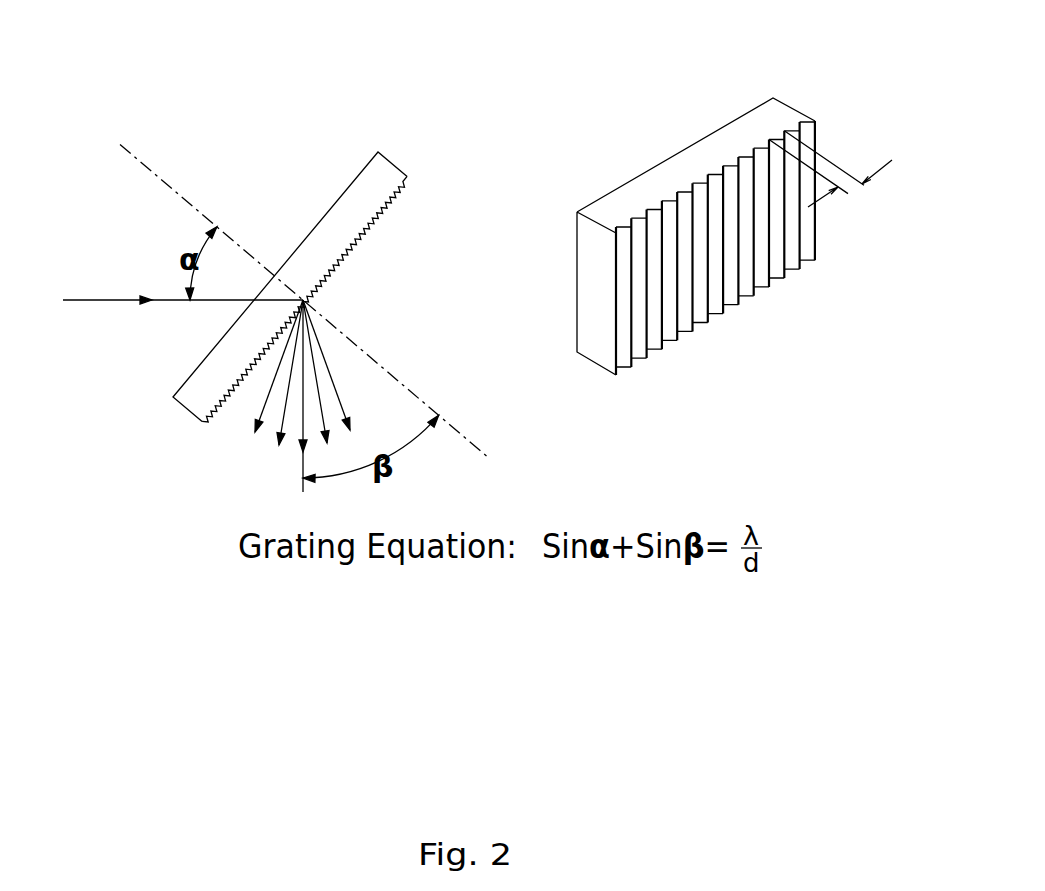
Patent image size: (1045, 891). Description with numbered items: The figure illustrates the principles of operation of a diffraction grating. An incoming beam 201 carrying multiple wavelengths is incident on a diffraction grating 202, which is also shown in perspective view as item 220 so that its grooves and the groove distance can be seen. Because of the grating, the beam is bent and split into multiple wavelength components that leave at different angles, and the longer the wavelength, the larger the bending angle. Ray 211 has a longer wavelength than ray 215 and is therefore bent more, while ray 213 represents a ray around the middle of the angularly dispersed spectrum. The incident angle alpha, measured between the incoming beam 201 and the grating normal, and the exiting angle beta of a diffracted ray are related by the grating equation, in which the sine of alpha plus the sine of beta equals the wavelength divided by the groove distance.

The incoming beam 201 is at (88, 280).
The diffraction grating 202 is at (401, 139).
The ray 211 is at (250, 410).
The ray 213 is at (287, 462).
The ray 215 is at (350, 370).
The perspective view of the diffraction grating 220 is at (724, 101).